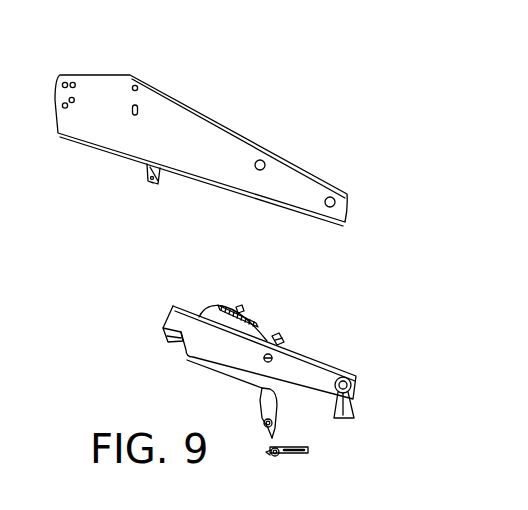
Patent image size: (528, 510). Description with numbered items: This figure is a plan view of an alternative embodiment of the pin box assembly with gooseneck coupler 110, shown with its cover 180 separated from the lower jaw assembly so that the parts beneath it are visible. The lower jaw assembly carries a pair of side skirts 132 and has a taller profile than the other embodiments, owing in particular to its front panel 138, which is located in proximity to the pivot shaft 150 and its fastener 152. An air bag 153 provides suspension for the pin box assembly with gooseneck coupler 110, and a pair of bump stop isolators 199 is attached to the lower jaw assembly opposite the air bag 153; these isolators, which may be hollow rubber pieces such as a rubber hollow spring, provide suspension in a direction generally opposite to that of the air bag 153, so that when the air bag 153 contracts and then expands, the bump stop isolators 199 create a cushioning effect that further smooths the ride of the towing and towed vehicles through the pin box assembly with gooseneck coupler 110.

The cover 180 is at (280, 135).
The pin box assembly with gooseneck coupler 110 is at (355, 331).
The side skirts 132 is at (306, 370).
The air bag 153 is at (217, 304).
The bump stop isolators 199 is at (166, 342).
The front panel 138 is at (308, 450).
The pivot shaft 150 is at (353, 405).
The fastener 152 is at (343, 398).